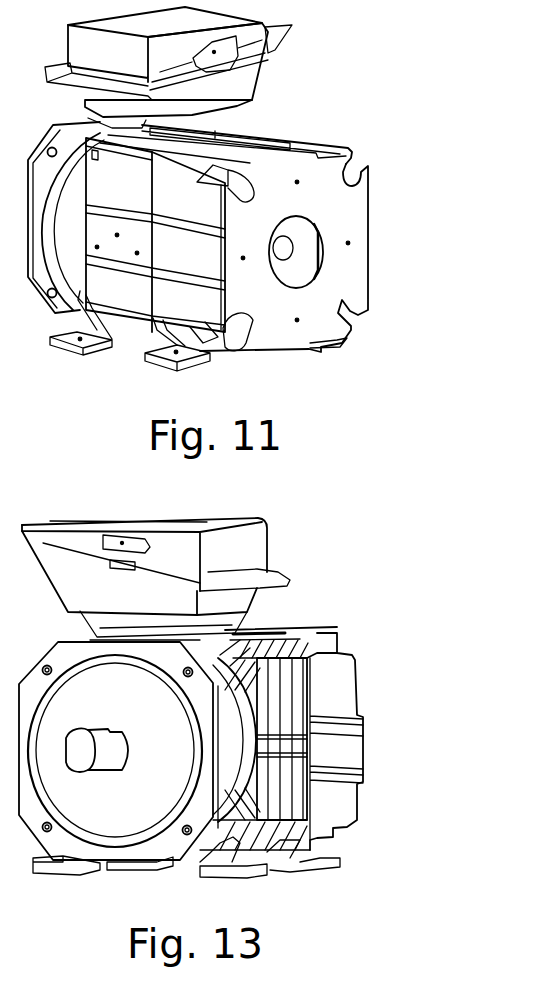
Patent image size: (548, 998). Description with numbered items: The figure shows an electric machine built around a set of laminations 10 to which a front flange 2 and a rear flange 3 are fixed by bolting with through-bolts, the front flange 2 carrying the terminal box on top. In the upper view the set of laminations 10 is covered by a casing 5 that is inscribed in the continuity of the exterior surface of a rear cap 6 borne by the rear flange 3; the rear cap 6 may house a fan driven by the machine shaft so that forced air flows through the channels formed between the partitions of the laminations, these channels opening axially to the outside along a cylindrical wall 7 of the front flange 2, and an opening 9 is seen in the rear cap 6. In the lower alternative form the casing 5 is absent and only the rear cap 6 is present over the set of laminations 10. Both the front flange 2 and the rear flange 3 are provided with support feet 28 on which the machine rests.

In FIG. 13, the front flange 2 is at (108, 815).
In FIG. 13, the rear flange 3 is at (327, 872).
In FIG. 11, the casing 5 is at (235, 118).
In FIG. 11, the rear cap 6 is at (347, 230).
In FIG. 13, the rear cap 6 is at (359, 683).
In FIG. 11, the cylindrical wall 7 is at (73, 168).
In FIG. 11, the bearing seat opening 9 is at (326, 253).
In FIG. 13, the set of laminations 10 is at (288, 628).
In FIG. 11, the support feet 28 is at (83, 350).
In FIG. 13, the support feet 28 is at (262, 872).